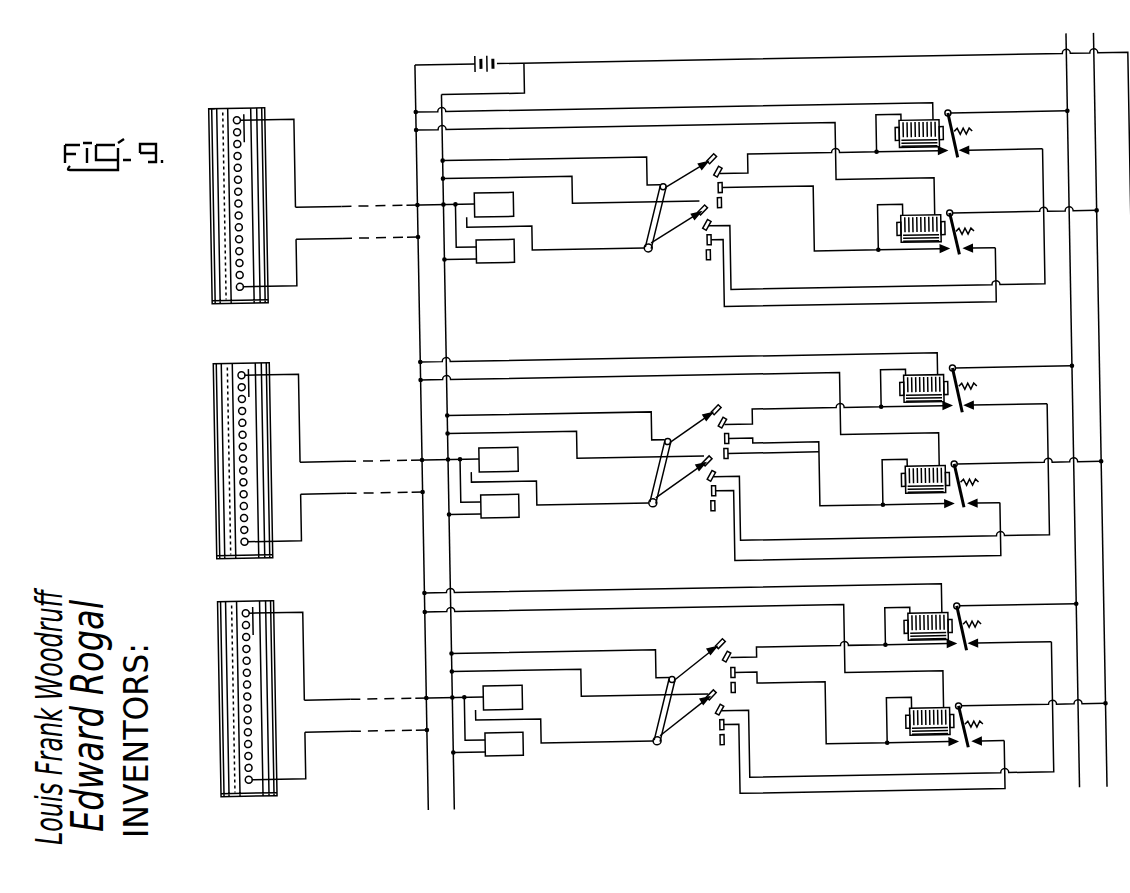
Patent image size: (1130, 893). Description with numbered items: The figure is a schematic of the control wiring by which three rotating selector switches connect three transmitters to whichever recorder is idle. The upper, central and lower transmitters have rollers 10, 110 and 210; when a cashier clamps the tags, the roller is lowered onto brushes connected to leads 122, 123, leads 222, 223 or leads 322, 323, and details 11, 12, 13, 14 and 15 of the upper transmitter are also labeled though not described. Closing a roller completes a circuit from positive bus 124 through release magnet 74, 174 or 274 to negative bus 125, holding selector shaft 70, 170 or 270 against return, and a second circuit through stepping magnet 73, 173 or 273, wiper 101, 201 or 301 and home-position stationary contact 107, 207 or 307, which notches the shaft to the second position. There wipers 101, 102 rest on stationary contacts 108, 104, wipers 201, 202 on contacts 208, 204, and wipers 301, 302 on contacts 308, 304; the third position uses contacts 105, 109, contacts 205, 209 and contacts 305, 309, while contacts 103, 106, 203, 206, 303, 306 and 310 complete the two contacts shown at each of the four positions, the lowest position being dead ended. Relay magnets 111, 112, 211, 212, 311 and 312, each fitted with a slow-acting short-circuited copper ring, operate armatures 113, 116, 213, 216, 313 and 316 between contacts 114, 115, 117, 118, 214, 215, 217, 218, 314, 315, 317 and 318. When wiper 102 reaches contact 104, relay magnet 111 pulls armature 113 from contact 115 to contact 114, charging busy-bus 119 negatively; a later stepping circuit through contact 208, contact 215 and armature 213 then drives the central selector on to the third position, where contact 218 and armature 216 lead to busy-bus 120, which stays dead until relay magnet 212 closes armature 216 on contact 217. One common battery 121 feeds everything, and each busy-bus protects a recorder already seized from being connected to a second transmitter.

The roller 10 is at (214, 198).
The tube end 11 is at (213, 101).
The contact hole 12 is at (238, 123).
The contact hole 13 is at (238, 244).
The contact hole 14 is at (238, 267).
The contact hole 15 is at (238, 280).
The roller 110 is at (443, 405).
The roller 210 is at (451, 649).
The lead 122 is at (295, 108).
The lead 123 is at (295, 286).
The lead 222 is at (278, 405).
The lead 223 is at (279, 531).
The lead 322 is at (282, 643).
The lead 323 is at (283, 769).
The stepping magnet 73 is at (518, 197).
The release magnet 74 is at (517, 258).
The stepping magnet 173 is at (518, 458).
The release magnet 174 is at (520, 514).
The stepping magnet 273 is at (522, 696).
The release magnet 274 is at (524, 752).
The shaft 70 is at (652, 219).
The shaft 170 is at (647, 473).
The shaft 270 is at (655, 710).
The wiper 101 is at (689, 228).
The wiper 102 is at (694, 178).
The contact 103 is at (722, 148).
The stationary contact 104 is at (728, 168).
The stationary contact 105 is at (722, 189).
The contact 106 is at (726, 204).
The stationary contact 107 is at (710, 214).
The stationary contact 108 is at (707, 231).
The stationary contact 109 is at (712, 246).
The wiper 201 is at (680, 479).
The wiper 202 is at (691, 426).
The contact 203 is at (732, 399).
The stationary contact 204 is at (811, 398).
The stationary contact 205 is at (816, 464).
The contact 206 is at (771, 458).
The stationary contact 207 is at (700, 451).
The stationary contact 208 is at (849, 473).
The stationary contact 209 is at (831, 521).
The lower switch arm 301 is at (684, 715).
The upper switch arm 302 is at (694, 662).
The contact 303 is at (734, 631).
The stationary contact 304 is at (816, 634).
The stationary contact 305 is at (822, 702).
The contact 306 is at (765, 694).
The contact 307 is at (708, 684).
The stationary contact 308 is at (862, 710).
The stationary contact 309 is at (833, 755).
The contact 310 is at (711, 765).
The relay magnet 111 is at (919, 125).
The relay magnet 112 is at (920, 220).
The armature 113 is at (966, 108).
The contact 114 is at (912, 158).
The contact 115 is at (1001, 156).
The relay armature 116 is at (966, 208).
The relay contact 117 is at (913, 256).
The relay contact 118 is at (980, 256).
The relay magnet 211 is at (923, 380).
The relay magnet 212 is at (925, 471).
The armature 213 is at (1012, 378).
The relay contact 214 is at (916, 413).
The contact 215 is at (1006, 411).
The armature 216 is at (1027, 474).
The contact 217 is at (918, 511).
The contact 218 is at (985, 511).
The relay magnet 311 is at (928, 618).
The relay magnet 312 is at (929, 712).
The relay armature 313 is at (1016, 616).
The relay contact 314 is at (920, 651).
The relay contact 315 is at (1010, 649).
The relay armature 316 is at (1031, 715).
The relay contact 317 is at (922, 749).
The relay contact 318 is at (989, 749).
The busy-bus 119 is at (1072, 346).
The busy-bus 120 is at (1101, 416).
The common battery 121 is at (500, 58).
The positive bus 124 is at (418, 352).
The negative bus 125 is at (447, 356).